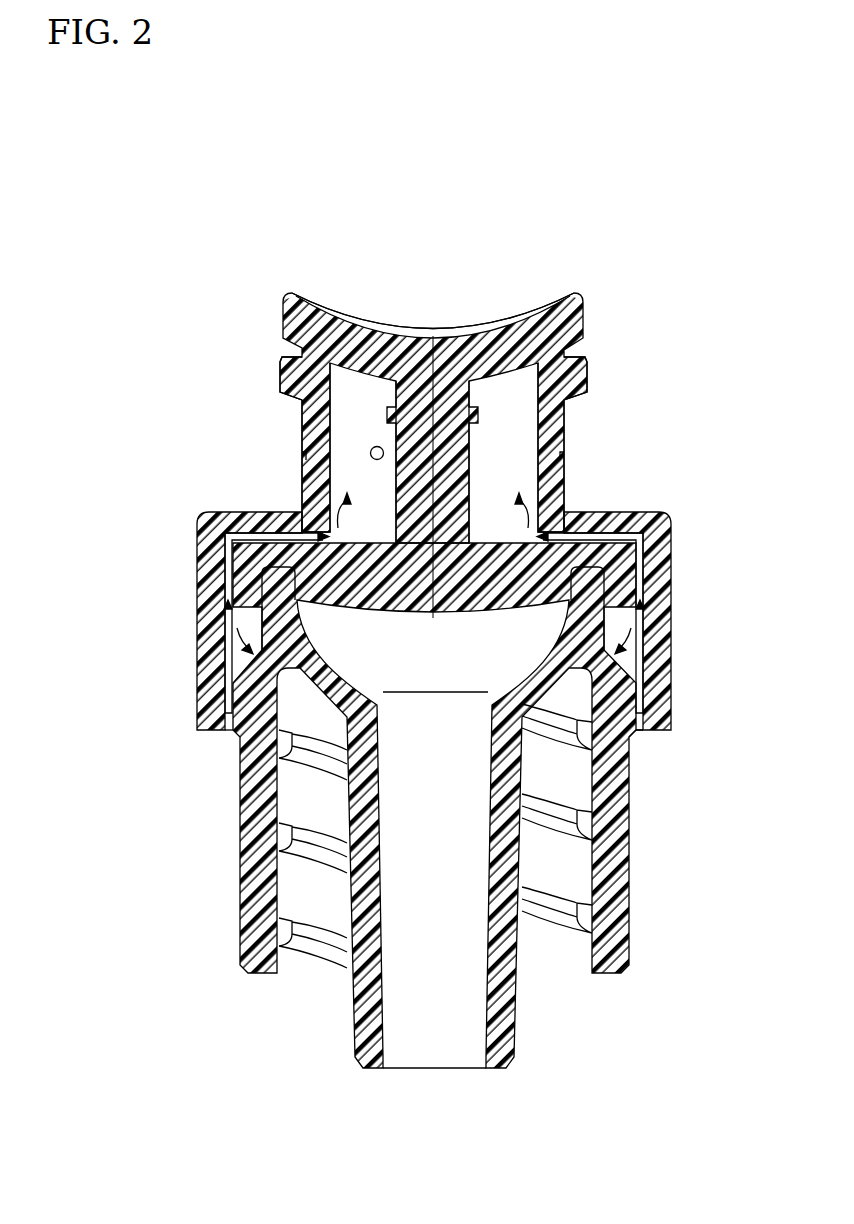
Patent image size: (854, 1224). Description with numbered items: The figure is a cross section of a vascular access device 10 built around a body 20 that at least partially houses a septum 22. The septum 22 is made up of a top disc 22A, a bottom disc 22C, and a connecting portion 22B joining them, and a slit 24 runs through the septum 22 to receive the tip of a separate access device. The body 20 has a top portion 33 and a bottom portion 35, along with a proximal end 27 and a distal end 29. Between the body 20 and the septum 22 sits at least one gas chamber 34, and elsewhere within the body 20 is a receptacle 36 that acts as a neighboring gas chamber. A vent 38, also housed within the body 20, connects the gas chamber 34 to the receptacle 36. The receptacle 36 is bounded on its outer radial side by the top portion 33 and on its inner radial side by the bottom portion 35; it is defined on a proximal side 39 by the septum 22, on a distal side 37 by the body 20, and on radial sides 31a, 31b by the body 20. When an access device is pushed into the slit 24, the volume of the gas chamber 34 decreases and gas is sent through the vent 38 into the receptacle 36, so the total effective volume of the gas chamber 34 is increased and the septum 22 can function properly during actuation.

The vascular access device 10 is at (190, 175).
The body 20 is at (197, 668).
The septum 22 is at (284, 313).
The top disc 22A is at (583, 302).
The connecting portion 22B is at (462, 443).
The bottom disc 22C is at (226, 576).
The slit 24 is at (433, 333).
The proximal end 27 is at (586, 357).
The distal end 29 is at (630, 957).
The radial side 31a is at (226, 622).
The radial side 31b is at (603, 614).
The top portion 33 is at (670, 547).
The gas chamber 34 is at (345, 480).
The bottom portion 35 is at (630, 797).
The receptacle 36 is at (237, 657).
The distal side 37 is at (663, 678).
The vent 38 is at (237, 537).
The proximal side 39 is at (638, 616).